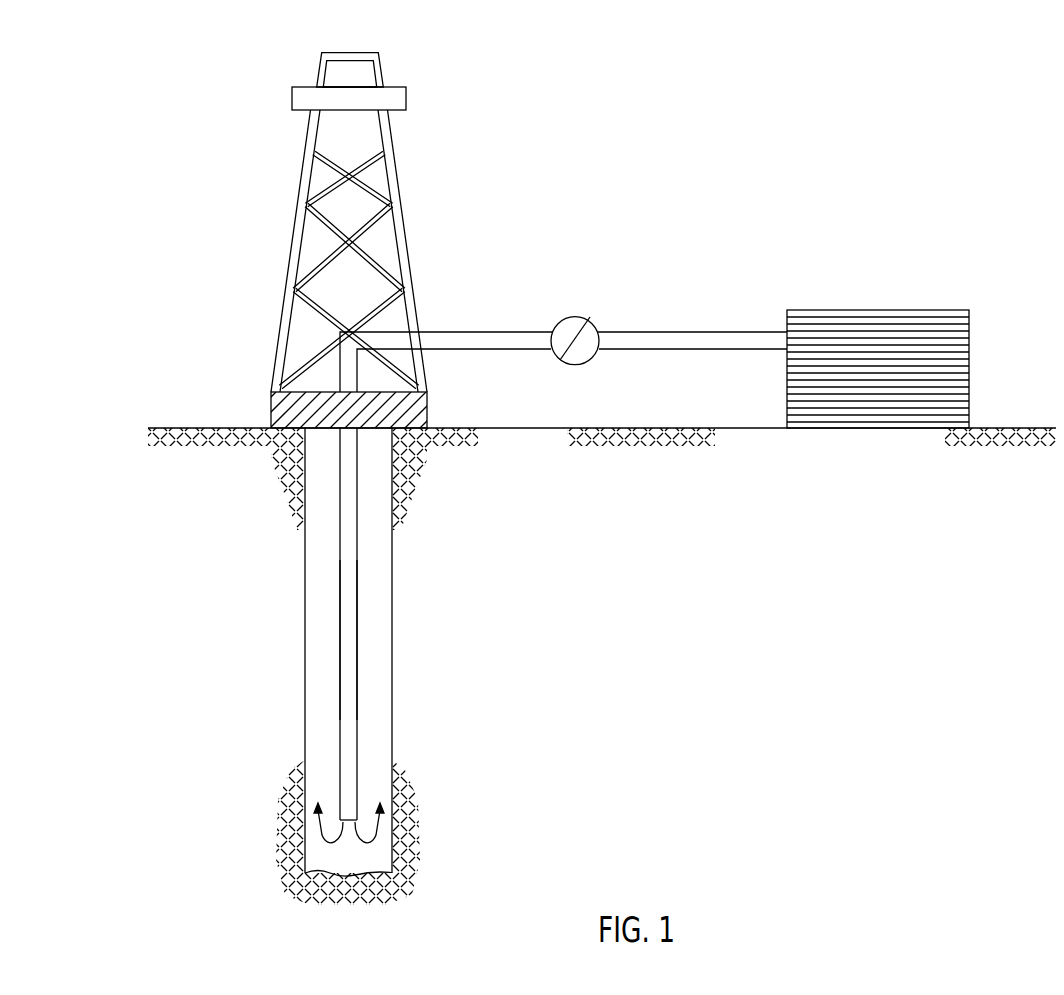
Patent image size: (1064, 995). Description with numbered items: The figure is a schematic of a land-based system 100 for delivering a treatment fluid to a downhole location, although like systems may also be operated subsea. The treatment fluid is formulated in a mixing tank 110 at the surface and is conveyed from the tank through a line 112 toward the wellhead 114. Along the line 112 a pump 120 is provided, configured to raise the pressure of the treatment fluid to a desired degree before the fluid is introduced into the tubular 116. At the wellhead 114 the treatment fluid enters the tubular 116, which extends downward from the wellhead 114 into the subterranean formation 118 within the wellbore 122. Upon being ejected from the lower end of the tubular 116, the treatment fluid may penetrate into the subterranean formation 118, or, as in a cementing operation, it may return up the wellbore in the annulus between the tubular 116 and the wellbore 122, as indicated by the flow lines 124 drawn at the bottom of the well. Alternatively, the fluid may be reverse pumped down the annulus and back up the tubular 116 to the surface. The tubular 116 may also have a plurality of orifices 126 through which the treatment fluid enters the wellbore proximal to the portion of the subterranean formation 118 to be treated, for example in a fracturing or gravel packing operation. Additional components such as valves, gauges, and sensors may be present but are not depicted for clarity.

The system 100 is at (146, 58).
The mixing tank 110 is at (945, 316).
The line 112 is at (486, 331).
The wellhead 114 is at (270, 412).
The tubular 116 is at (357, 562).
The subterranean formation 118 is at (232, 660).
The pump 120 is at (590, 318).
The wellbore 122 is at (392, 652).
The flow lines 124 is at (308, 832).
The orifices 126 is at (357, 595).